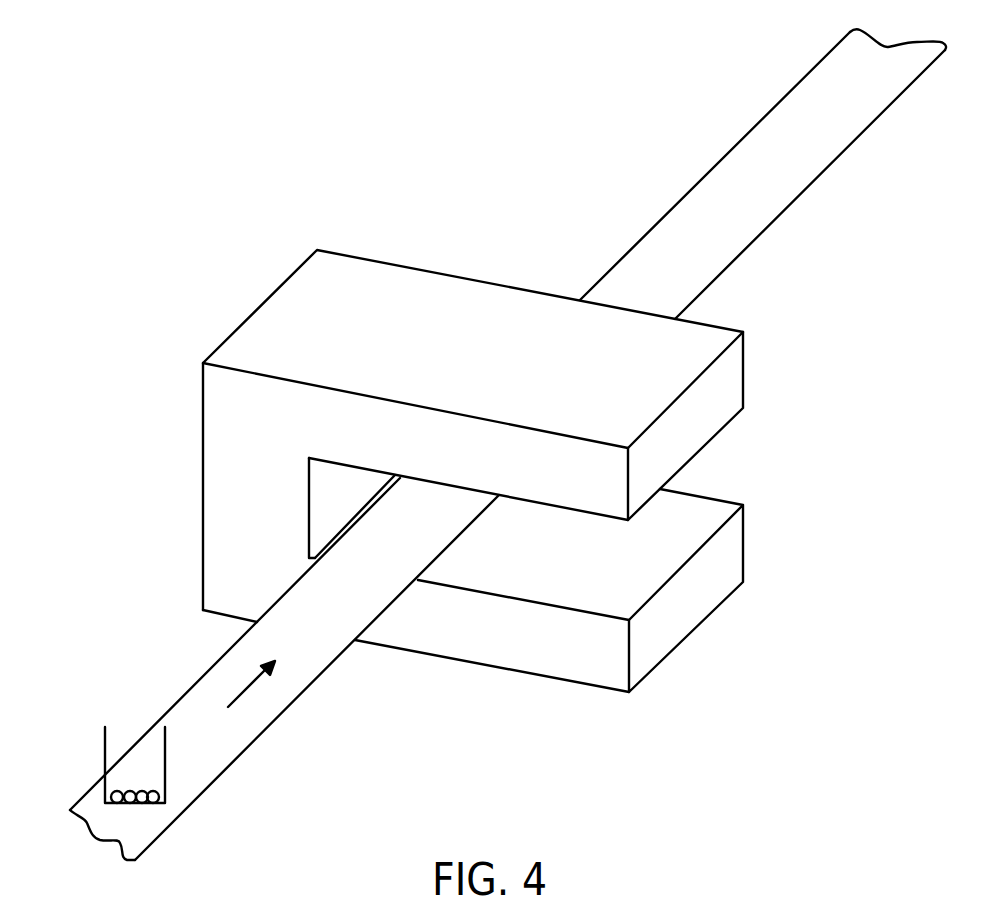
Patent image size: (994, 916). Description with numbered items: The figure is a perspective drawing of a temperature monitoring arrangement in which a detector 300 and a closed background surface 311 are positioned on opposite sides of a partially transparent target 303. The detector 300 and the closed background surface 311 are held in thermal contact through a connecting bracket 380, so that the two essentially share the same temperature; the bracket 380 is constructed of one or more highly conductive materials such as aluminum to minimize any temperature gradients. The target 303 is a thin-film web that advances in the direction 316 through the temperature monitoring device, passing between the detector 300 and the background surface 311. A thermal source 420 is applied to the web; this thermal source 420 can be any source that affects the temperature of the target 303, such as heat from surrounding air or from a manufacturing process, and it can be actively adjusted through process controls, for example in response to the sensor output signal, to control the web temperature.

The partially transparent target 303 is at (812, 162).
The detector 300 is at (590, 382).
The connecting bracket 380 is at (280, 511).
The closed background surface 311 is at (552, 657).
The direction 316 is at (250, 683).
The thermal source 420 is at (104, 737).